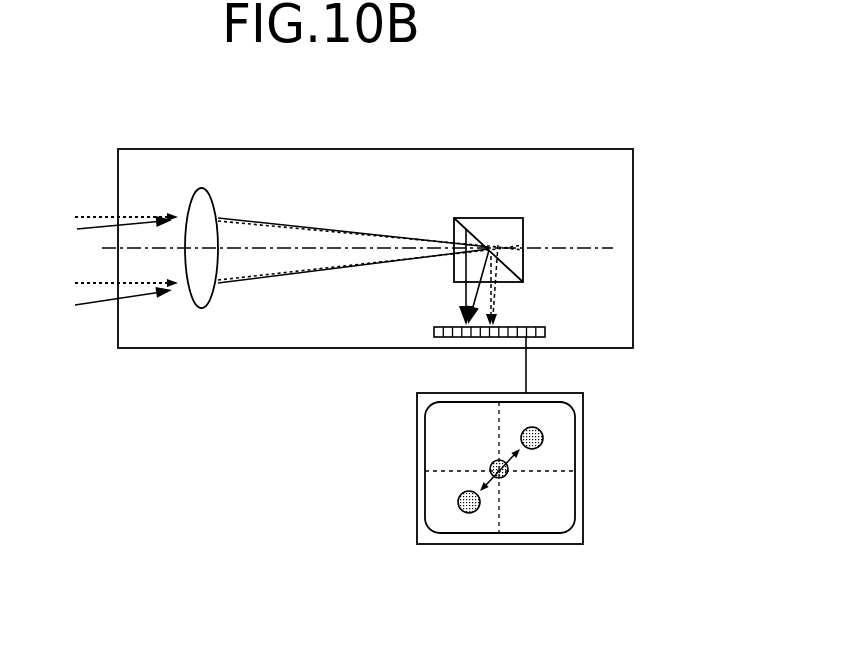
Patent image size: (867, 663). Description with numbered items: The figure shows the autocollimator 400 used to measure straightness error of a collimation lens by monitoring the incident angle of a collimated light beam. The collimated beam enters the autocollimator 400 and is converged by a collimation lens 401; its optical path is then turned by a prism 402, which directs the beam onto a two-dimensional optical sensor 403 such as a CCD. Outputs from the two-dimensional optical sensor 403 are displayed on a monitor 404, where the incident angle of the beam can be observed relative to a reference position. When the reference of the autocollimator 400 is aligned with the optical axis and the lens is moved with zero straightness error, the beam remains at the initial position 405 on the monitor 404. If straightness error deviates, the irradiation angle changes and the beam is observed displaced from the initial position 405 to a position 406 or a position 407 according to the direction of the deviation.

The autocollimator 400 is at (373, 166).
The collimation lens 401 is at (214, 198).
The prism 402 is at (493, 215).
The two-dimensional optical sensor 403 is at (540, 318).
The monitor 404 is at (440, 543).
The initial position 405 is at (517, 473).
The position 406 is at (550, 435).
The position 407 is at (490, 507).